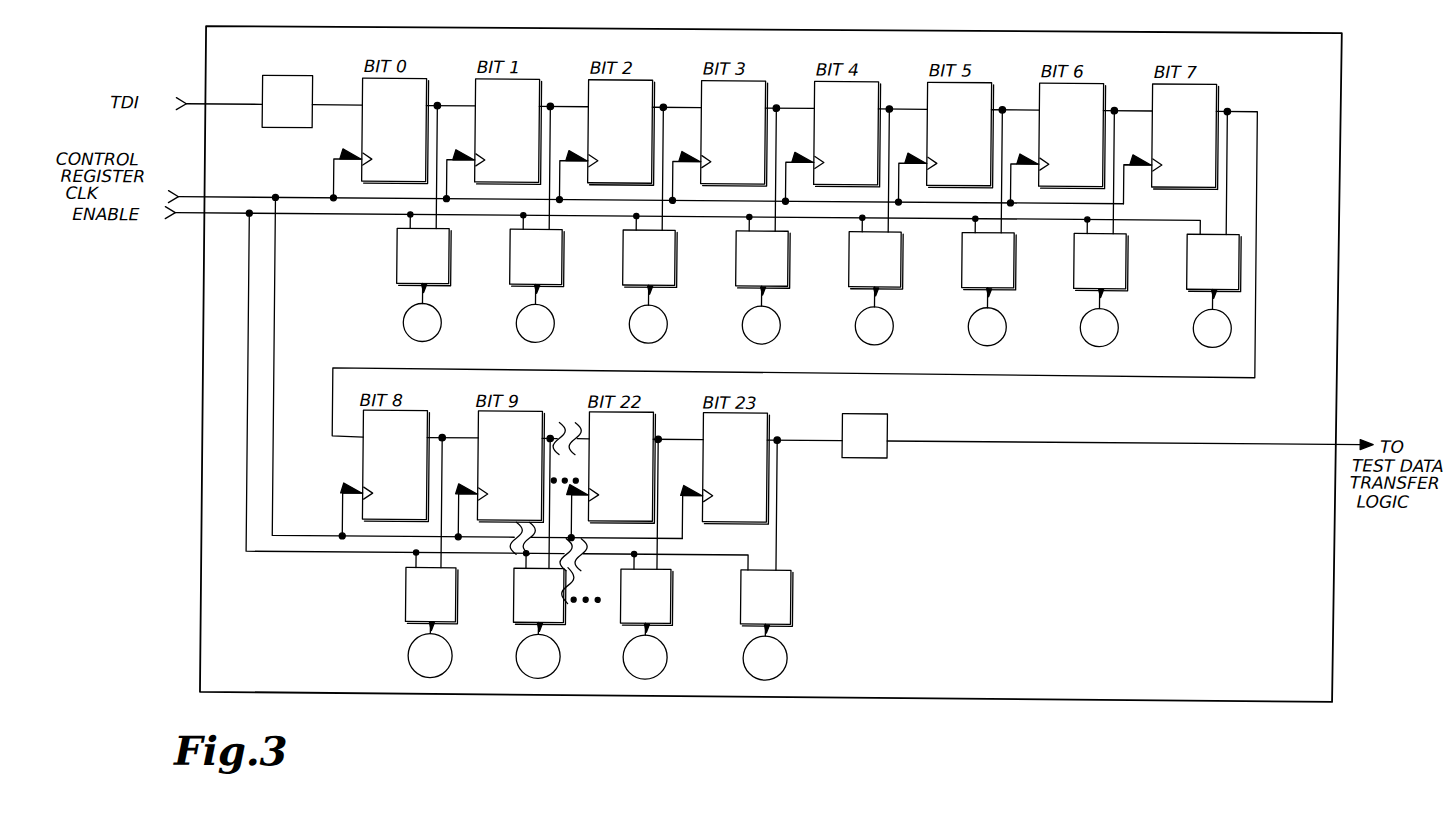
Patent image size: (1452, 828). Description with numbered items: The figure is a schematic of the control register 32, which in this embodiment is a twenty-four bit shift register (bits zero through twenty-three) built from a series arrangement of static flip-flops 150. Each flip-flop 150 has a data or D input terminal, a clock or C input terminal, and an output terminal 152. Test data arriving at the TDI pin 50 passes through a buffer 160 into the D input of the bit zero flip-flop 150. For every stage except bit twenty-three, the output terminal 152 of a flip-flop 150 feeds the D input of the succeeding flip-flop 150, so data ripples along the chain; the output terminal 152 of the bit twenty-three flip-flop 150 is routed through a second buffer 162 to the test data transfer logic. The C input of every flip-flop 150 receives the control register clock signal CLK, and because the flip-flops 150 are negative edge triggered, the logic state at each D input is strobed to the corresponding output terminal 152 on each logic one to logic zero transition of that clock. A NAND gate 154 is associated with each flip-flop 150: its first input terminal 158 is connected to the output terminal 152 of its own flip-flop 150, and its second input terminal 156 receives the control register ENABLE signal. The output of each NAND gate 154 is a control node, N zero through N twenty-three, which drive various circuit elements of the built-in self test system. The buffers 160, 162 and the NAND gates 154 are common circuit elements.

The control register 32 is at (798, 26).
The TDI pin 50 is at (185, 104).
The static flip-flop 150 is at (406, 140).
The output terminal 152 is at (435, 102).
The NAND gate 154 is at (439, 273).
The second input terminal 156 is at (409, 216).
The first input terminal 158 is at (435, 218).
The buffer 160 is at (301, 119).
The buffer 162 is at (880, 450).